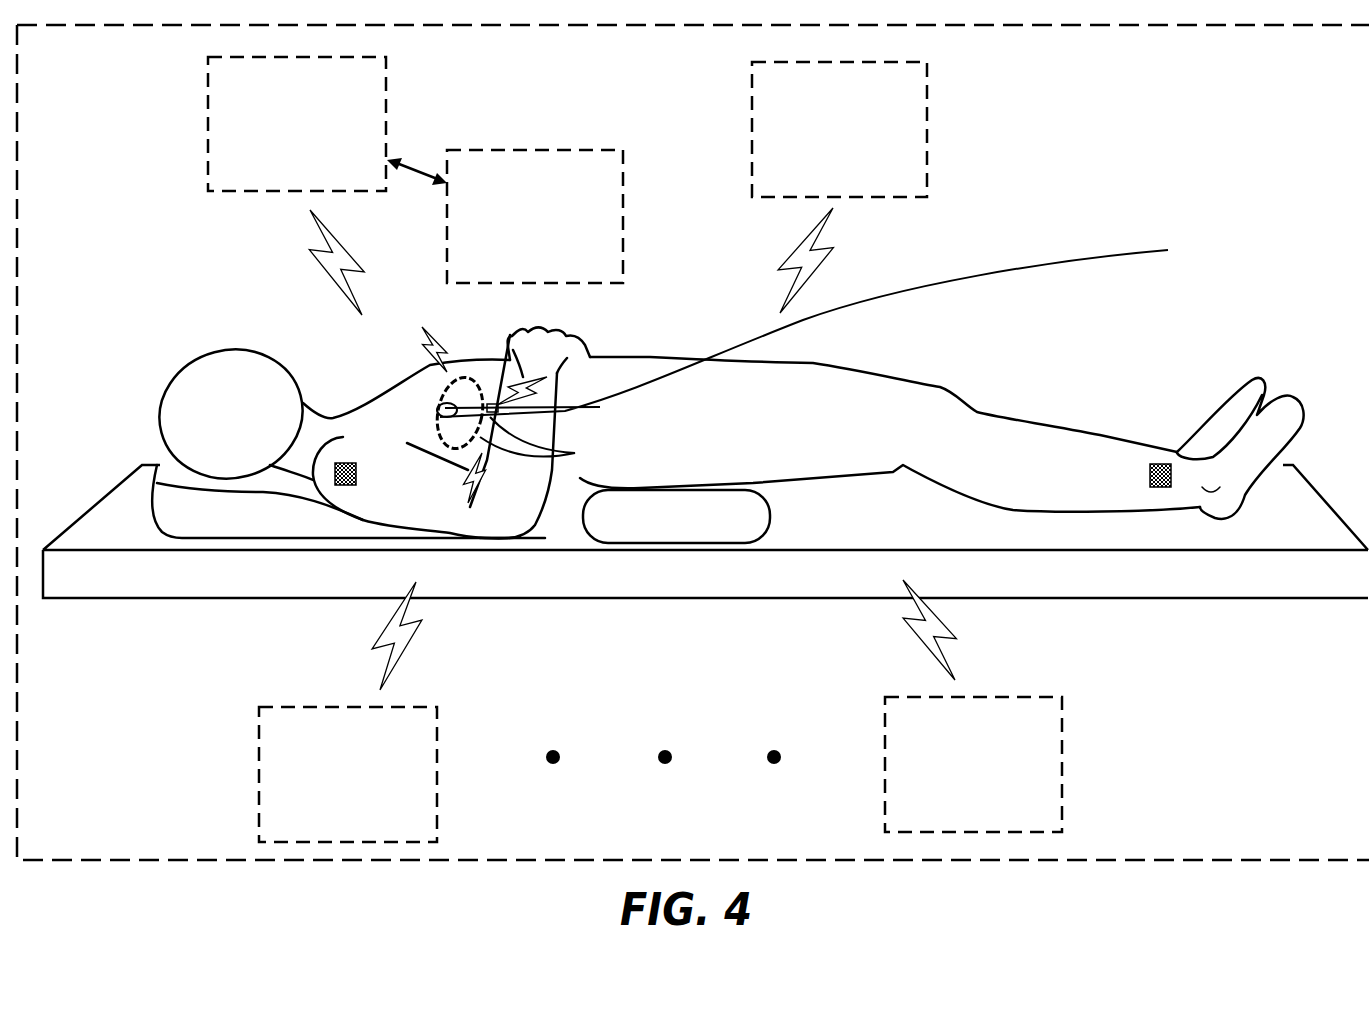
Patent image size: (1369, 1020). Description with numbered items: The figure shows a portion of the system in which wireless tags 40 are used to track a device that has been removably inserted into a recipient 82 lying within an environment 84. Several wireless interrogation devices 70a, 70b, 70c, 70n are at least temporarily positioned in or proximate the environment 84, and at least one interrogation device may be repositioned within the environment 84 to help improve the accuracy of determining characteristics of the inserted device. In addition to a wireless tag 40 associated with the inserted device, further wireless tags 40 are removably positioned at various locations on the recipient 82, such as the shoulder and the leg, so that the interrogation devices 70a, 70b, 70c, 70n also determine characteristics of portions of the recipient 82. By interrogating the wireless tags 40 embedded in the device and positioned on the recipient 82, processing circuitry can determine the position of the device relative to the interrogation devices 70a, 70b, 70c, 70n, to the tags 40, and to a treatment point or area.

The environment 84 is at (75, 82).
The recipient 82 is at (1073, 487).
The wireless tag 40 is at (350, 462).
The wireless interrogation device 70a is at (279, 181).
The wireless interrogation device 70b is at (822, 187).
The wireless interrogation device 70c is at (330, 832).
The wireless interrogation device 70n is at (956, 822).